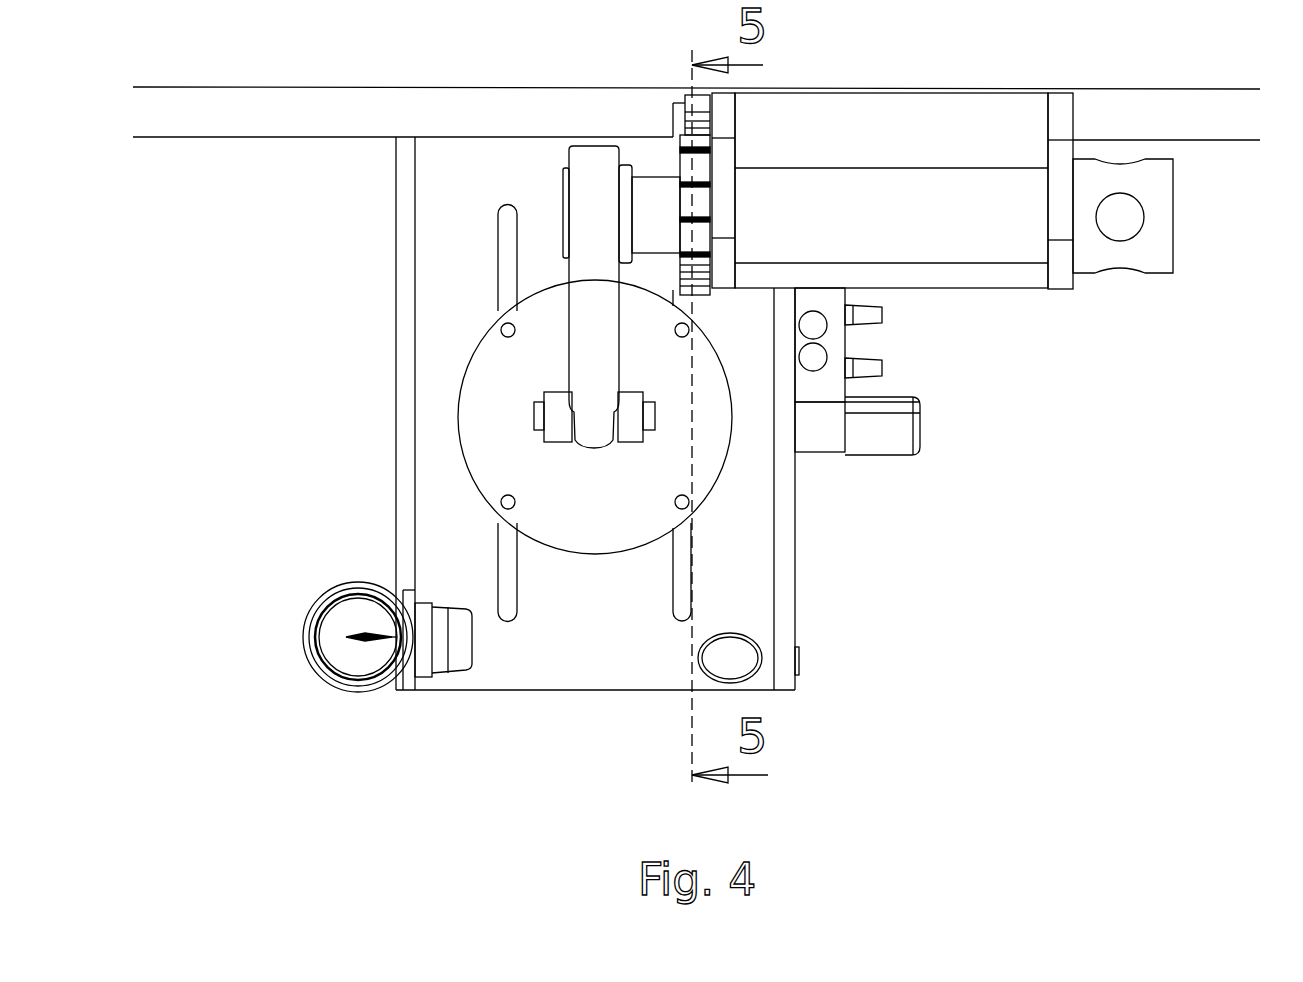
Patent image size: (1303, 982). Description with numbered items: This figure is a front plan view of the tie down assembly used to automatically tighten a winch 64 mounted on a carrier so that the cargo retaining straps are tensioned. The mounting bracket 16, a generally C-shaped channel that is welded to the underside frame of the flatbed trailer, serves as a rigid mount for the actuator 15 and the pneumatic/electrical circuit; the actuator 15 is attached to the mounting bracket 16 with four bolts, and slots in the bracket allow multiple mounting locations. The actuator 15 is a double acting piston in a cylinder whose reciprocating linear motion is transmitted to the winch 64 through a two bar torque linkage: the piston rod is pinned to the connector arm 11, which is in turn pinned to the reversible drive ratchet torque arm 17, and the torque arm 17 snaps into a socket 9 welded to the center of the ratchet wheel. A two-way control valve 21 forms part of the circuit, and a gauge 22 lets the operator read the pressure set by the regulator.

The socket 9 is at (653, 206).
The connector arm 11 is at (632, 407).
The actuator 15 is at (495, 417).
The mounting bracket 16 is at (455, 286).
The reversible drive ratchet torque arm 17 is at (593, 343).
The 2-way control valve 21 is at (740, 655).
The gauge 22 is at (335, 625).
The winch 64 is at (1128, 333).